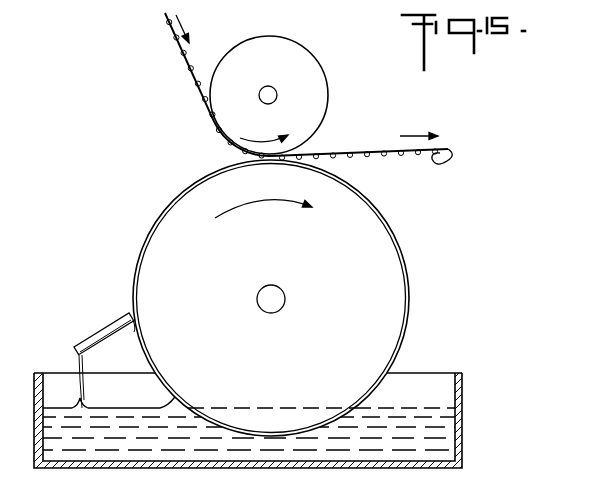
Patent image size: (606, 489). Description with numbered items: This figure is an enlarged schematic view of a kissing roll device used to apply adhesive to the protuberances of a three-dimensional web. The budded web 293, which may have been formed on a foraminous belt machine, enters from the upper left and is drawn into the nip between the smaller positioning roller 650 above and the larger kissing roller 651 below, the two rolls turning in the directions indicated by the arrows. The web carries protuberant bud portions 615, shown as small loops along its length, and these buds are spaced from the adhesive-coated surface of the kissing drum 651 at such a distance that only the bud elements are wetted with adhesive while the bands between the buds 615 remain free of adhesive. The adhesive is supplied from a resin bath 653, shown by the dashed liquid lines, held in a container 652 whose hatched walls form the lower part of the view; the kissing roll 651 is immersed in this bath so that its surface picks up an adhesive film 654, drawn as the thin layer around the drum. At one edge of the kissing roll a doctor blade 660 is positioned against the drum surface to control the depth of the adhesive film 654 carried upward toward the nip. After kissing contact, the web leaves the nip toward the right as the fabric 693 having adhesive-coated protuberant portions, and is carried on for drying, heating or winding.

The budded web 293 is at (167, 18).
The protuberant bud portions 615 is at (188, 65).
The positioning roller 650 is at (295, 55).
The kissing roller 651 is at (292, 252).
The adhesive film 654 is at (158, 220).
The doctor blade 660 is at (112, 305).
The container 652 is at (463, 386).
The resin bath 653 is at (440, 428).
The fabric 693 is at (447, 165).